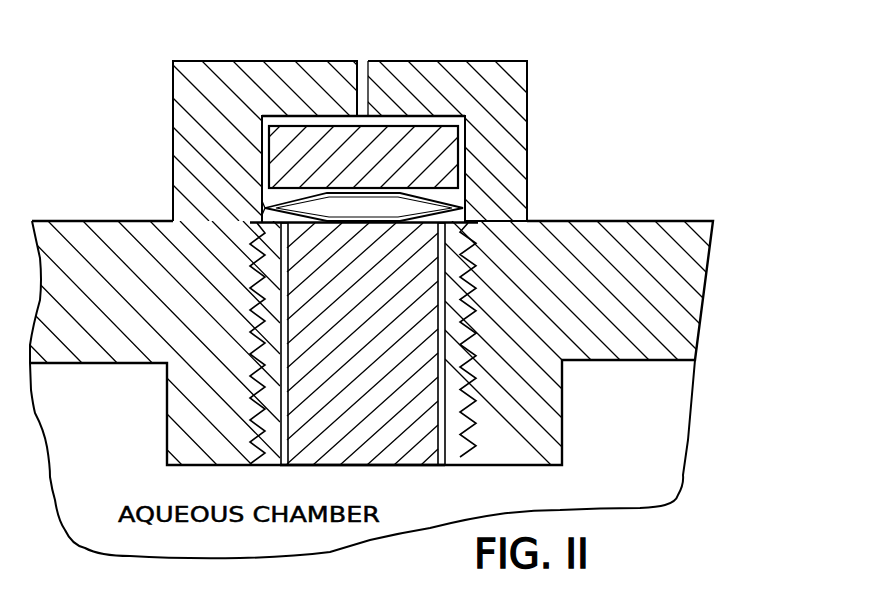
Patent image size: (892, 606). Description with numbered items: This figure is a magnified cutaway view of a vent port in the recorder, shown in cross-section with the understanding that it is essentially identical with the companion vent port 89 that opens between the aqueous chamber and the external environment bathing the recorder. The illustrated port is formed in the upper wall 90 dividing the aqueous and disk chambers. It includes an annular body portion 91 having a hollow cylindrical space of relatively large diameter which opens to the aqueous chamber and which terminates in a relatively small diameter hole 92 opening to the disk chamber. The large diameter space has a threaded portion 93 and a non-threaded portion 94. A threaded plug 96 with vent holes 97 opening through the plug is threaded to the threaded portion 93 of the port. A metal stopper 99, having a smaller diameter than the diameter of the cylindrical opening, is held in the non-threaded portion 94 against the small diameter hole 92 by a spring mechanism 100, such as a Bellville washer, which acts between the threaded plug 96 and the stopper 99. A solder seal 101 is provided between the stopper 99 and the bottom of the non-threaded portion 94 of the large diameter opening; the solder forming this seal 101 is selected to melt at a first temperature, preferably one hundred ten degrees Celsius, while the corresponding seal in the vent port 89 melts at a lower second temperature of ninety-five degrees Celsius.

The vent port 89 is at (158, 100).
The upper wall 90 is at (612, 240).
The annular body portion 91 is at (517, 92).
The small diameter hole 92 is at (363, 70).
The threaded portion 93 is at (475, 450).
The non-threaded portion 94 is at (457, 200).
The threaded plug 96 is at (373, 448).
The vent holes 97 is at (285, 462).
The metal stopper 99 is at (448, 157).
The spring mechanism 100 is at (265, 204).
The solder seal 101 is at (281, 120).